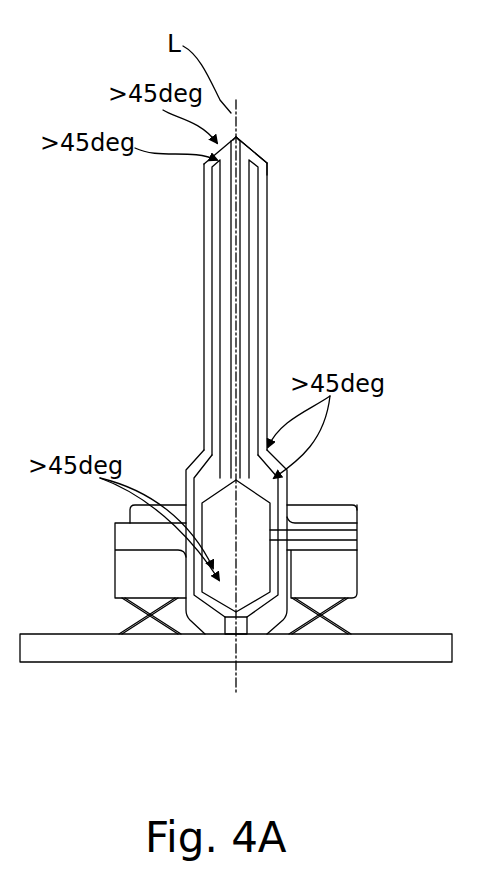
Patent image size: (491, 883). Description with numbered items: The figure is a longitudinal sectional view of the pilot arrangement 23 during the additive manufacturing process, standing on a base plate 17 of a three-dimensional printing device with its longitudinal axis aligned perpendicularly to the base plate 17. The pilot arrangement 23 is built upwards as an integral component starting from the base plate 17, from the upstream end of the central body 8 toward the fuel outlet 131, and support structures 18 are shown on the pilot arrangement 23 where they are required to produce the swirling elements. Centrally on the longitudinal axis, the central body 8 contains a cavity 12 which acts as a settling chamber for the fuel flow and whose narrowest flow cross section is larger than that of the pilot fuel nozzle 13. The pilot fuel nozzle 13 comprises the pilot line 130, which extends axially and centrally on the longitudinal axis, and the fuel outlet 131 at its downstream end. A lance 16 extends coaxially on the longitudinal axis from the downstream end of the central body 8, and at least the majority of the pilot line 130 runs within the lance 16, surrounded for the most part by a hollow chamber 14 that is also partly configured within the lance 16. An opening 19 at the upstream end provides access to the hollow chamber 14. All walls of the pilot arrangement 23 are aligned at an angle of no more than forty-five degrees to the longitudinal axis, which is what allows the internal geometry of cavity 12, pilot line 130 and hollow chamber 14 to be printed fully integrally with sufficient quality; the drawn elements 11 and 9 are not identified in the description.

The pilot arrangement 23 is at (258, 105).
The fuel outlet 131 is at (237, 138).
The pilot line 130 is at (242, 162).
The pilot fuel nozzle 13 is at (243, 240).
The lance 16 is at (213, 308).
The hollow chamber 14 is at (255, 298).
The central body 8 is at (207, 468).
The cavity 12 is at (268, 490).
The lateral tube 11 is at (340, 540).
The side block 9 is at (120, 575).
The support structures 18 is at (340, 622).
The base plate 17 is at (325, 662).
The opening 19 is at (238, 625).